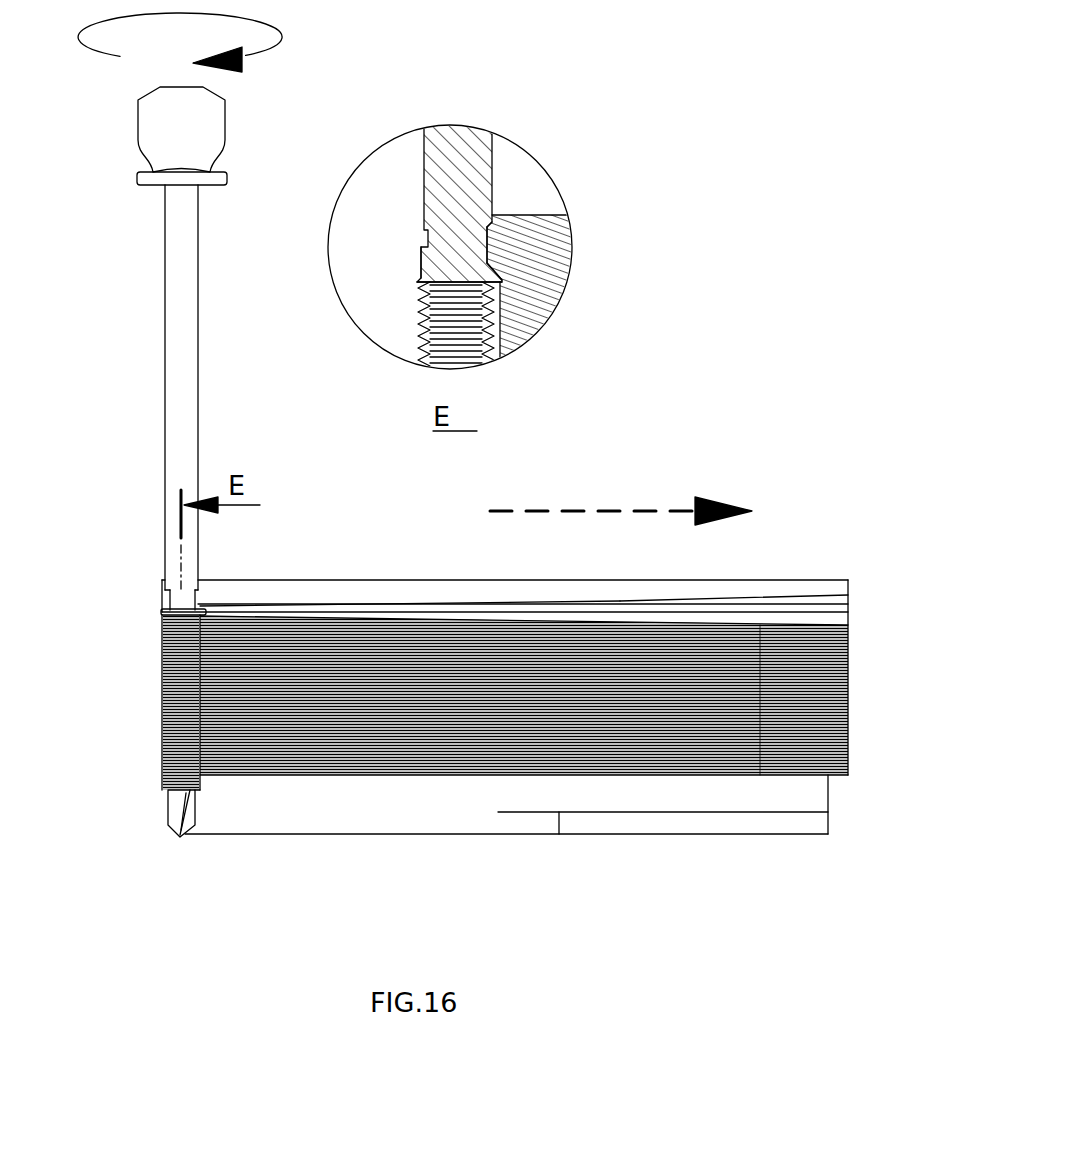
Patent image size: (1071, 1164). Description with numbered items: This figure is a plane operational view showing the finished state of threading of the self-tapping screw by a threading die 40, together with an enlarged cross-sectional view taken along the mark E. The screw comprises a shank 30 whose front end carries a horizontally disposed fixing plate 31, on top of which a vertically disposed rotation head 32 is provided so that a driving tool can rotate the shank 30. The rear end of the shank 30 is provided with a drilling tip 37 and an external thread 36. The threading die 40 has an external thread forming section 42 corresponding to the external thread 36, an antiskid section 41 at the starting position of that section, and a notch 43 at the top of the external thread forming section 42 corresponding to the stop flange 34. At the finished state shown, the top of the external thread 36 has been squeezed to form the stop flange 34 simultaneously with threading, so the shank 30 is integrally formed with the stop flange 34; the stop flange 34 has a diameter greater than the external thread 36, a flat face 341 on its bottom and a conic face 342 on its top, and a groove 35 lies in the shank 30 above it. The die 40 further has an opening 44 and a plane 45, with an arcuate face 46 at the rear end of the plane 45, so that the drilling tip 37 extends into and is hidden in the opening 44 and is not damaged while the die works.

The shank 30 is at (175, 333).
The fixing plate 31 is at (140, 178).
The rotation head 32 is at (160, 124).
The stop flange 34 is at (165, 612).
The flat face 341 is at (433, 292).
The conic face 342 is at (420, 272).
The groove 35 is at (168, 605).
The external thread 36 is at (165, 693).
The drilling tip 37 is at (173, 812).
The threading die 40 is at (393, 580).
The antiskid section 41 is at (790, 625).
The external thread forming section 42 is at (495, 665).
The notch 43 is at (848, 612).
The opening 44 is at (757, 795).
The plane 45 is at (695, 825).
The arcuate face 46 is at (540, 826).